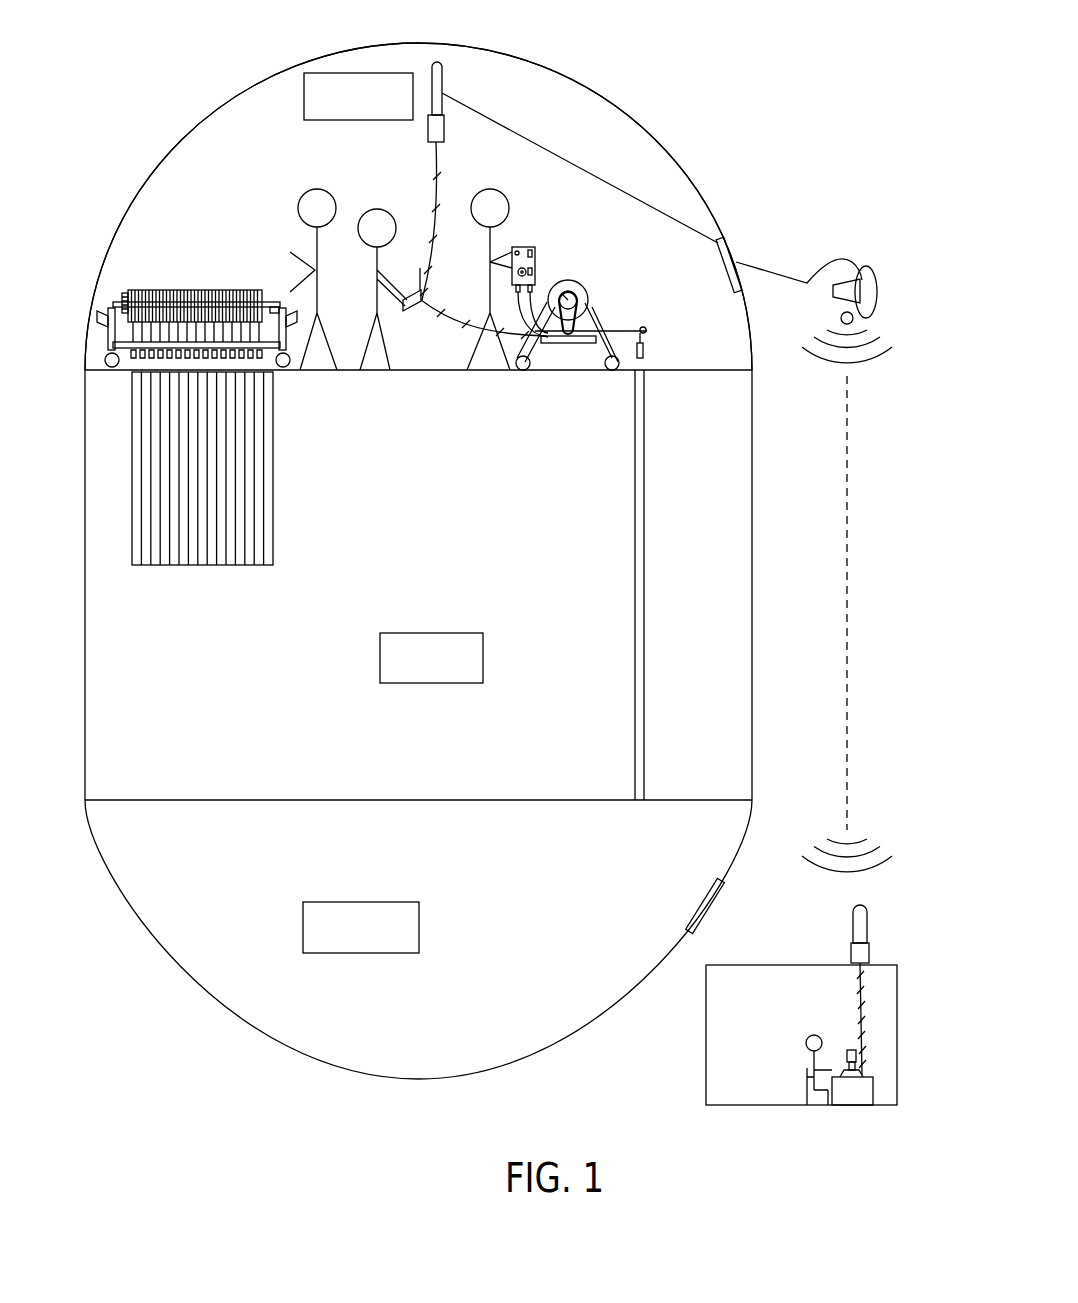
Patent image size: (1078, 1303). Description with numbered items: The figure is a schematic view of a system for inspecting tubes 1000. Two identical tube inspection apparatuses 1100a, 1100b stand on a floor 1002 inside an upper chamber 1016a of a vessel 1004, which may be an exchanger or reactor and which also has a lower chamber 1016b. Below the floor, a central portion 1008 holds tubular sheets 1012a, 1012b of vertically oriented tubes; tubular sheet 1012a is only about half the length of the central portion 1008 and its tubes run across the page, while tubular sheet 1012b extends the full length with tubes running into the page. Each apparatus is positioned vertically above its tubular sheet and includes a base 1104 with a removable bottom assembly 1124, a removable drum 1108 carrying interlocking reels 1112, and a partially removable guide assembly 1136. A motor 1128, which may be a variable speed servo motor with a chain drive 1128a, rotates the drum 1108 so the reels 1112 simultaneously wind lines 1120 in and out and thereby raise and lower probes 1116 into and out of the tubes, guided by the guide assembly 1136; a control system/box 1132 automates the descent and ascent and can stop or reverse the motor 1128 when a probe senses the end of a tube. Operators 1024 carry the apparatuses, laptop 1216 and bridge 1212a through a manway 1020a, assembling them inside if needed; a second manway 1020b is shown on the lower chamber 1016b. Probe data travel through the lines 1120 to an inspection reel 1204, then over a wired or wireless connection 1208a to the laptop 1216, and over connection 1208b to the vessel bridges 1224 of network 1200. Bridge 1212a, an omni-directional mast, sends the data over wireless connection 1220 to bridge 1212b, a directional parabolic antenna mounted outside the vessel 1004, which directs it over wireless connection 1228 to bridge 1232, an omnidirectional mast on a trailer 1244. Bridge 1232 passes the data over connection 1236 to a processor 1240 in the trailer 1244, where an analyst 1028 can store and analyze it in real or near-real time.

The system for inspecting tubes 1000 is at (415, 561).
The floor 1002 is at (742, 373).
The vessel 1004 is at (247, 90).
The central portion 1008 is at (412, 672).
The tubular sheet 1012a is at (286, 488).
The tubular sheet 1012b is at (620, 549).
The upper chamber 1016a is at (335, 111).
The lower chamber 1016b is at (338, 942).
The manway 1020a is at (738, 245).
The manway 1020b is at (700, 901).
The operators 1024 is at (470, 186).
The analyst 1028 is at (786, 1041).
The tube inspection apparatus 1100a is at (195, 344).
The tube inspection apparatus 1100b is at (628, 306).
The base 1104 is at (115, 346).
The removable drum 1108 is at (181, 290).
The interlocking reels 1112 is at (246, 290).
The probes 1116 is at (260, 352).
The lines 1120 is at (616, 307).
The removable bottom assembly 1124 is at (594, 342).
The motor 1128 is at (565, 306).
The chain drive 1128a is at (549, 338).
The control system/box 1132 is at (522, 247).
The guide assembly 1136 is at (645, 333).
The network 1200 is at (878, 563).
The inspection reel 1204 is at (550, 348).
The wired or wireless connection 1208a is at (461, 322).
The wired or wireless connection 1208b is at (443, 161).
The bridge 1212a is at (442, 75).
The bridge 1212b is at (878, 293).
The laptop 1216 is at (407, 312).
The wireless connection 1220 is at (611, 183).
The vessel bridge(s) 1224 is at (487, 82).
The wireless connection 1228 is at (848, 615).
The bridge 1232 is at (870, 953).
The wired or wireless connection 1236 is at (868, 1022).
The processor 1240 is at (862, 1075).
The trailer 1244 is at (792, 1005).